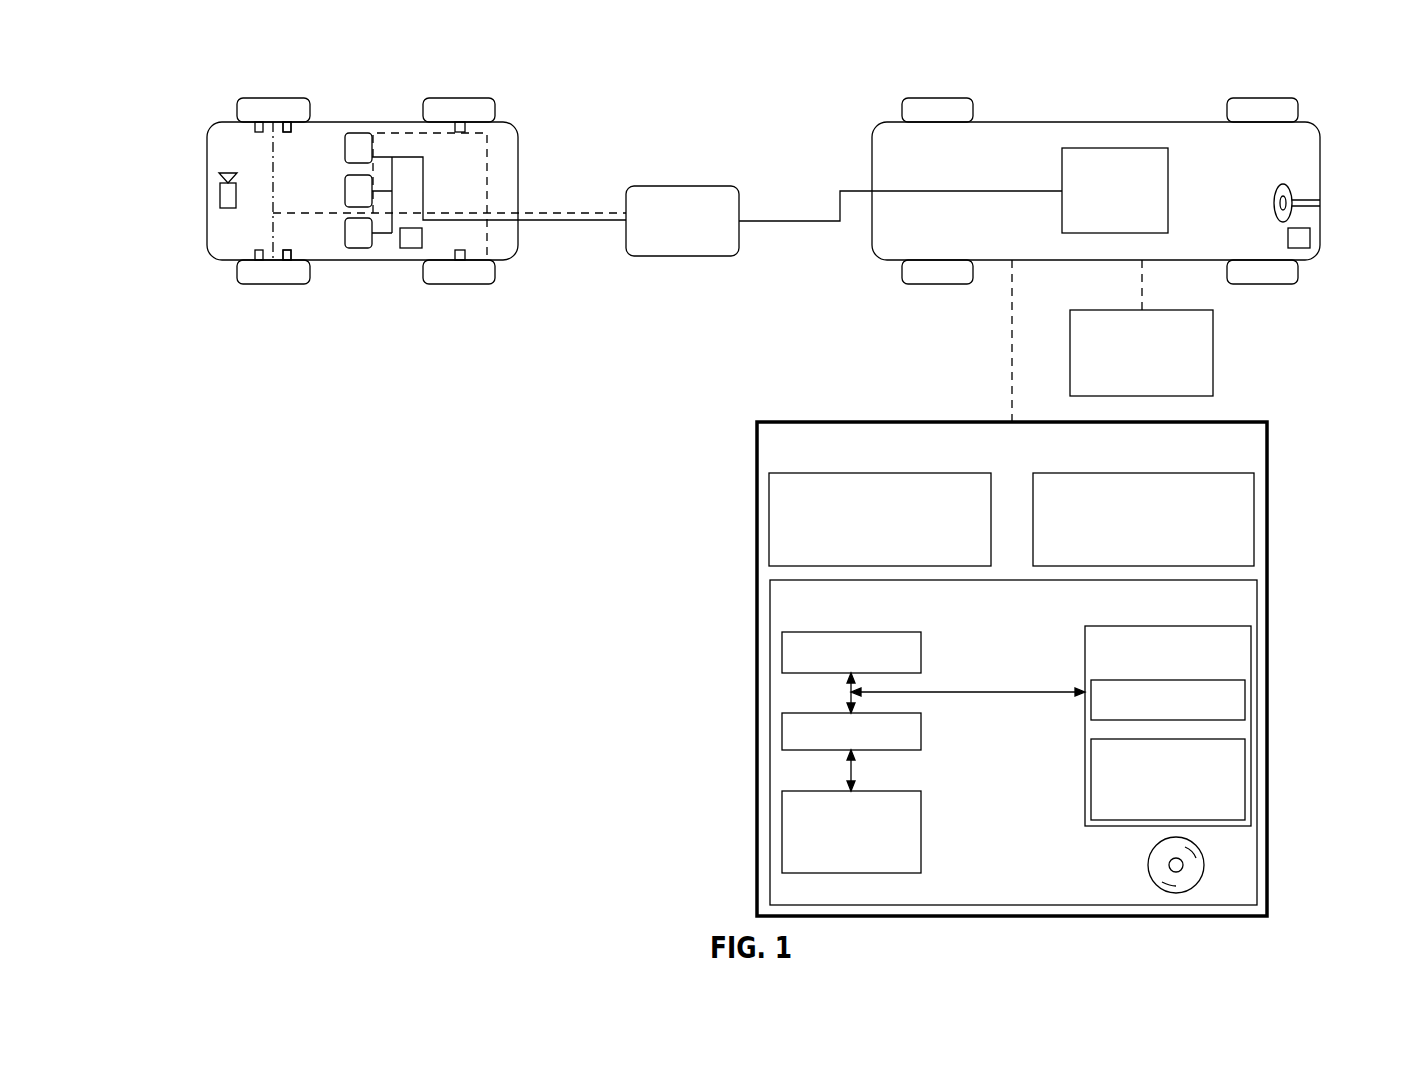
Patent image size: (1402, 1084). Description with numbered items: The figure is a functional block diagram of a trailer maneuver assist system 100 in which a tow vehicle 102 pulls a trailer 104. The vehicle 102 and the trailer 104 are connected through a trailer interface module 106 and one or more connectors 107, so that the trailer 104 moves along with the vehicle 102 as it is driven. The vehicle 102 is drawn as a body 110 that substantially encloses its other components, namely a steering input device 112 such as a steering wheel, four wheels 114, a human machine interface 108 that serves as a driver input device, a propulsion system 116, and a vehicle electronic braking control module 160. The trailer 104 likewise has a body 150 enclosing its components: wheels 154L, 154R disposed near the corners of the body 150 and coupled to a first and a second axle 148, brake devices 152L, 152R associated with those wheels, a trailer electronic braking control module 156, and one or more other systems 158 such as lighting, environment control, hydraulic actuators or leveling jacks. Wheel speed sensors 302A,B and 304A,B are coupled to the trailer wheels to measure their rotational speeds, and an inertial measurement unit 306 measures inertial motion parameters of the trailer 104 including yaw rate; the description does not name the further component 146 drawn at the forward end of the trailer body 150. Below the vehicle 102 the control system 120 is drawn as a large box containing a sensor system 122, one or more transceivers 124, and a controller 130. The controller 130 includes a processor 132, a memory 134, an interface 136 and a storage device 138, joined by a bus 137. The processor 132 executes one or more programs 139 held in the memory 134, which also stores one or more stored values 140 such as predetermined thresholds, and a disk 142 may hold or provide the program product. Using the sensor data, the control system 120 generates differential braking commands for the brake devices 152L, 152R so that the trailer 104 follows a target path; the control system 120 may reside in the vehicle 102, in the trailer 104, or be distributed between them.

The trailer maneuver assist system 100 is at (383, 683).
The vehicle 102 is at (1305, 118).
The trailer 104 is at (521, 123).
The trailer interface module 106 is at (678, 257).
The connectors 107 is at (560, 224).
The Human Machine Interface 108 is at (1312, 246).
The body 110 is at (1025, 147).
The steering input device 112 is at (1292, 197).
The wheels 114 is at (940, 98).
The propulsion system 116 is at (1155, 310).
The control system 120 is at (1213, 422).
The sensor system 122 is at (835, 473).
The transceivers 124 is at (1185, 473).
The memory 130 is at (770, 598).
The processor 132 is at (782, 652).
The memory 134 is at (1085, 636).
The interface 136 is at (782, 732).
The bus 137 is at (851, 688).
The storage device 138 is at (782, 832).
The program 139 is at (1091, 707).
The stored values 140 is at (1091, 780).
The disk 142 is at (1148, 865).
The camera 146 is at (220, 190).
The axle 148 is at (266, 234).
The body 150 is at (330, 250).
The brake device 152L is at (257, 128).
The brake device 152R is at (262, 284).
The wheels 154L is at (270, 99).
The wheels 154R is at (262, 284).
The trailer Electronic Braking Control Module 156 is at (356, 135).
The other systems 158 is at (345, 191).
The vehicle Electronic Braking Control Module 160 is at (1120, 148).
The wheel speed sensors 302A,B is at (286, 124).
The wheel speed sensors 304A,B is at (290, 265).
The Inertial Measurement Unit 306 is at (410, 250).